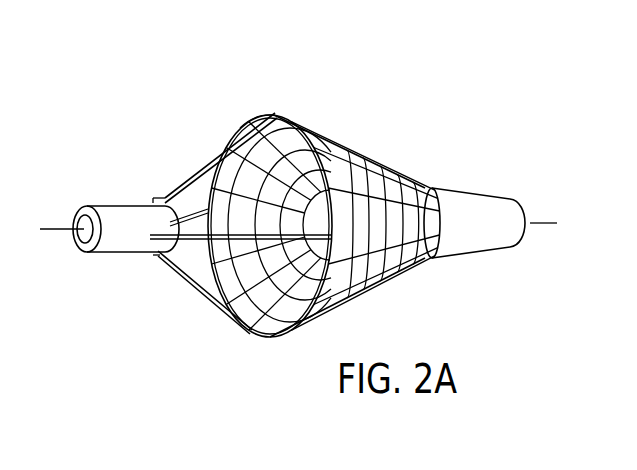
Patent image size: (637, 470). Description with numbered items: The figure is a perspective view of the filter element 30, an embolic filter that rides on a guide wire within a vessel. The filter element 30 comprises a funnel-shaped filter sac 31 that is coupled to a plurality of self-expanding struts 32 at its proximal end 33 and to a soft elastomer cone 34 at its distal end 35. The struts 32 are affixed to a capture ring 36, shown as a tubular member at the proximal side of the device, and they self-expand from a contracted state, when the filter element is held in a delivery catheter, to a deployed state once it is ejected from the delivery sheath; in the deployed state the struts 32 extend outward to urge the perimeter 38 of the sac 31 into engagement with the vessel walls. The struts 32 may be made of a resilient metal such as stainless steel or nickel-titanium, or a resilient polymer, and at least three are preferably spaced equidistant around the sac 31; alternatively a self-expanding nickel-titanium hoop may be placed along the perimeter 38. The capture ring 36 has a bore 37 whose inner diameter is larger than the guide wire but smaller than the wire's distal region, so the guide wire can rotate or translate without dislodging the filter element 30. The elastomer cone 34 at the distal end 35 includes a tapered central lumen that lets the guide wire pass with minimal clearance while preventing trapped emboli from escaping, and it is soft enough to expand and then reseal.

The filter element 30 is at (403, 101).
The funnel-shaped filter sac 31 is at (358, 168).
The self-expanding struts 32 is at (183, 168).
The proximal end 33 is at (73, 214).
The soft elastomer cone 34 is at (460, 200).
The distal end 35 is at (524, 212).
The capture ring 36 is at (118, 240).
The bore 37 is at (78, 238).
The perimeter 38 is at (290, 113).